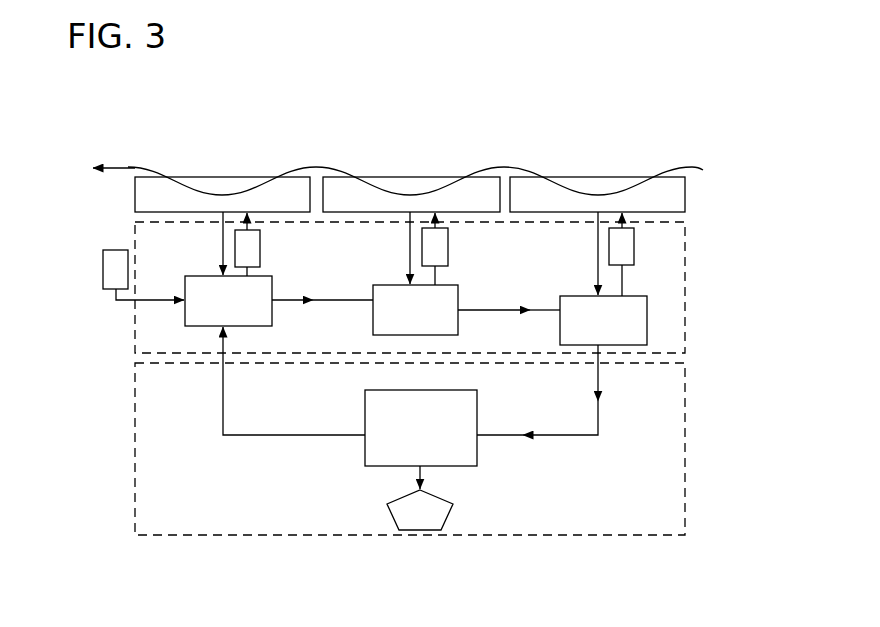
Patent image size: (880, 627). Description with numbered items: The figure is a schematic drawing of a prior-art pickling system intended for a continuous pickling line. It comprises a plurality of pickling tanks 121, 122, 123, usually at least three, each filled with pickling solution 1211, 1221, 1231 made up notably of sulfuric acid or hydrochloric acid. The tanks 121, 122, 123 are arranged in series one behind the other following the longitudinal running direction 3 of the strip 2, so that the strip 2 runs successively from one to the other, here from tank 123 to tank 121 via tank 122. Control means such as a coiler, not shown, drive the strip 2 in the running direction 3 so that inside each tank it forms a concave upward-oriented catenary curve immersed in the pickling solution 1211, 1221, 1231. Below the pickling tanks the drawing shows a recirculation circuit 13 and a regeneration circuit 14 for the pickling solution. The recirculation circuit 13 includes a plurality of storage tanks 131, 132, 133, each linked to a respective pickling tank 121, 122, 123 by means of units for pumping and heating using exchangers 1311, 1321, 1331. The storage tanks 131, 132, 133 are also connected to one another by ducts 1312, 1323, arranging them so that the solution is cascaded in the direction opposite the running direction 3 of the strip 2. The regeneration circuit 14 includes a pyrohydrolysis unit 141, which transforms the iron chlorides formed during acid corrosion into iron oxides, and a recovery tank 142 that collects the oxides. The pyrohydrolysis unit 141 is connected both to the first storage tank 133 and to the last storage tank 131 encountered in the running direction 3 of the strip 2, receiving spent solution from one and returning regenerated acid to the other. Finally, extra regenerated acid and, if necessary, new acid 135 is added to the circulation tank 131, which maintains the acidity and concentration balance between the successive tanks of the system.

The strip 2 is at (391, 135).
The running direction 3 is at (114, 183).
The recirculation circuit 13 is at (164, 344).
The regeneration circuit 14 is at (659, 474).
The pickling tank 121 is at (306, 208).
The pickling tank 122 is at (491, 208).
The pickling tank 123 is at (676, 208).
The pickling solution 1211 is at (250, 183).
The pickling solution 1221 is at (418, 183).
The pickling solution 1231 is at (598, 186).
The storage tank 131 is at (210, 314).
The storage tank 132 is at (398, 323).
The storage tank 133 is at (585, 335).
The unit for pumping and heating using exchangers 1311 is at (249, 245).
The unit for pumping and heating using exchangers 1321 is at (436, 246).
The unit for pumping and heating using exchangers 1331 is at (624, 246).
The duct 1312 is at (322, 290).
The duct 1323 is at (509, 299).
The new acid 135 is at (112, 254).
The pyrohydrolysis unit 141 is at (402, 440).
The recovery tank 142 is at (402, 520).